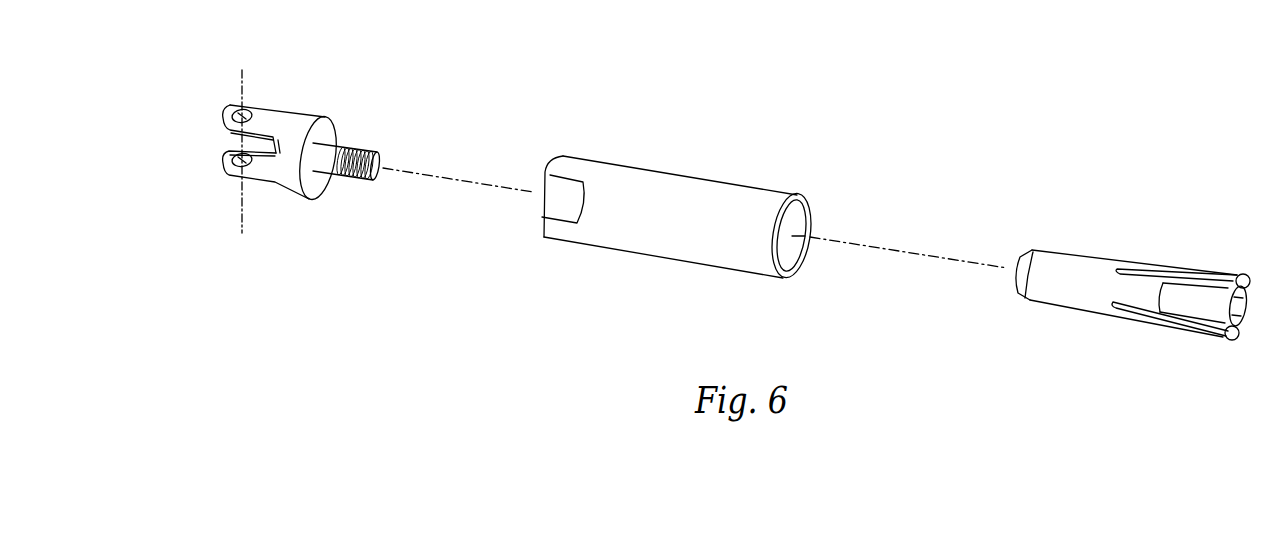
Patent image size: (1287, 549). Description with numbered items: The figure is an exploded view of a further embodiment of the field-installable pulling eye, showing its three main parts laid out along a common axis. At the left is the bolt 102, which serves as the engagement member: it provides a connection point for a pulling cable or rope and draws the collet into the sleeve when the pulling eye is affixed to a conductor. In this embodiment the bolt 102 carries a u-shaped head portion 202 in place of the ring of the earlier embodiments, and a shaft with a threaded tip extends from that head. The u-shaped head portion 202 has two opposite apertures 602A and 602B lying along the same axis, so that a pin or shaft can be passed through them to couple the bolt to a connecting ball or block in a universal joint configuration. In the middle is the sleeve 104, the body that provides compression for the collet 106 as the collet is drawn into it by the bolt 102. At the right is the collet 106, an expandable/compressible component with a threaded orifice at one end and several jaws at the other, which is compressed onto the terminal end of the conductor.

The bolt 102 is at (265, 133).
The u-shaped head portion 202 is at (293, 190).
The aperture 602A is at (238, 115).
The aperture 602B is at (237, 163).
The sleeve 104 is at (687, 147).
The collet 106 is at (1143, 232).